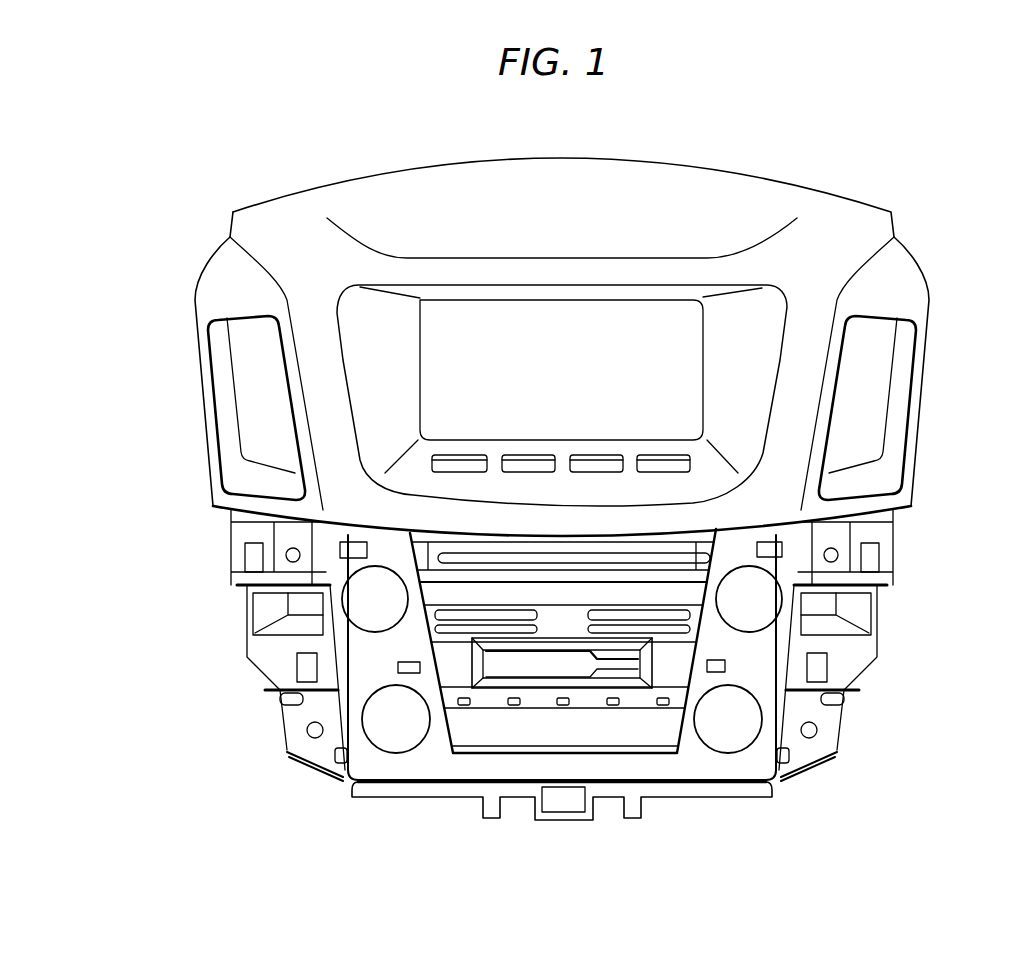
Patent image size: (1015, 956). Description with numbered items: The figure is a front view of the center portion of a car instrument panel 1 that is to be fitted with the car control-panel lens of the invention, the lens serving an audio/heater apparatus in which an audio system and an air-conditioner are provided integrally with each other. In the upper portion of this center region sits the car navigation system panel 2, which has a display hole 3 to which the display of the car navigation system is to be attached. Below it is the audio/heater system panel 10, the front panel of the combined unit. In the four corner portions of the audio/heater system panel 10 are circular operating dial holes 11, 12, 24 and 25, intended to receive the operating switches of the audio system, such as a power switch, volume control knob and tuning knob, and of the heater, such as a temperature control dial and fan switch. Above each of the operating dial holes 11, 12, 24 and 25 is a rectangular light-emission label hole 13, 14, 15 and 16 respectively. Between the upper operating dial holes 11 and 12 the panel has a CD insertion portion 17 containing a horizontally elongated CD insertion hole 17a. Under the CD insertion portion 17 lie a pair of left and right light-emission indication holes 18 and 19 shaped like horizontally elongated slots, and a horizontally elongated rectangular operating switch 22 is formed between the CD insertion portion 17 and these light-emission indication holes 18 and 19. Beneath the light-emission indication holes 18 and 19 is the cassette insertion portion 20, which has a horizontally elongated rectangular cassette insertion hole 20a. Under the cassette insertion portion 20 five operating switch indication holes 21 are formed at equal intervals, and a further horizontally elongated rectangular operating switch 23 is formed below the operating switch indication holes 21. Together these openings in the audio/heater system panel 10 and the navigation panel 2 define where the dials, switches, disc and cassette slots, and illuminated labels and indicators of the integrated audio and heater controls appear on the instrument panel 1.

The instrument panel assembly 1 is at (797, 167).
The car navigation system panel 2 is at (355, 313).
The display hole 3 is at (490, 318).
The audio/heater system panel 10 is at (380, 785).
The operating dial hole 11 is at (775, 596).
The operating dial hole 12 is at (350, 600).
The light-emission label hole 13 is at (780, 548).
The light-emission label hole 14 is at (357, 552).
The light-emission label hole 15 is at (727, 667).
The light-emission label hole 16 is at (396, 665).
The CD insertion portion 17 is at (680, 547).
The CD insertion hole 17a is at (707, 555).
The light-emission indication hole 18 is at (440, 613).
The light-emission indication hole 19 is at (690, 618).
The cassette insertion portion 20 is at (523, 684).
The cassette insertion hole 20a is at (628, 668).
The operating switch indication holes 21 is at (464, 708).
The operating switch 22 is at (430, 597).
The operating switch 23 is at (668, 732).
The operating dial hole 24 is at (820, 765).
The operating dial hole 25 is at (297, 760).